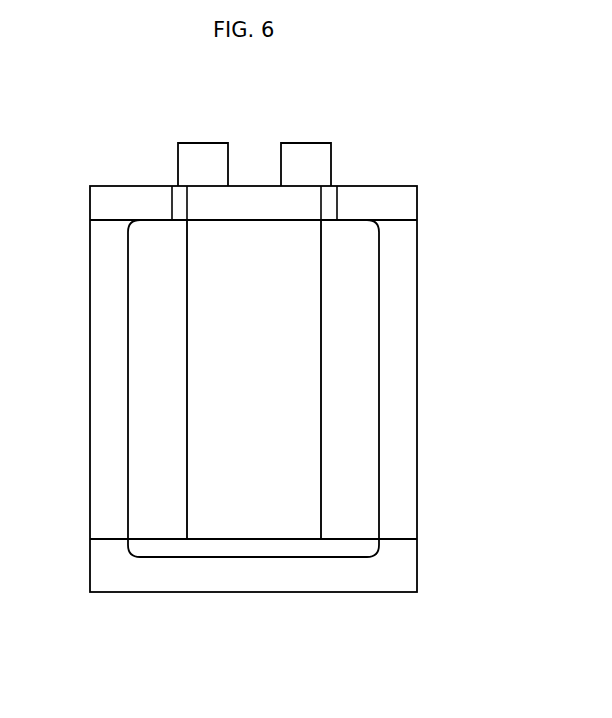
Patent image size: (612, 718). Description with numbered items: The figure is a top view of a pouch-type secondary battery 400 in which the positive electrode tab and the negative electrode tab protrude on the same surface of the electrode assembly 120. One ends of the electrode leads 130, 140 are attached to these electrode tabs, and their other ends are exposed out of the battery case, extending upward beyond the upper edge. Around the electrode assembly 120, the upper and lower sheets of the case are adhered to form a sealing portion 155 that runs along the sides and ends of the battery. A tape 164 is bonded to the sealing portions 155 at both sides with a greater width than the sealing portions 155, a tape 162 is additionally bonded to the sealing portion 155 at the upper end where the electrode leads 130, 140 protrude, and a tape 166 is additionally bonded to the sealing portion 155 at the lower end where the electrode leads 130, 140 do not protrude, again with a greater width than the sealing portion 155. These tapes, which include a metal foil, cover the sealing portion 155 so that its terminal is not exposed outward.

The pouch-type secondary battery 400 is at (393, 135).
The electrode assembly 120 is at (278, 386).
The electrode lead 130 is at (205, 148).
The electrode lead 140 is at (304, 148).
The sealing portion 155 is at (197, 195).
The tape 162 is at (142, 202).
The tape 164 is at (98, 238).
The tape 166 is at (268, 587).